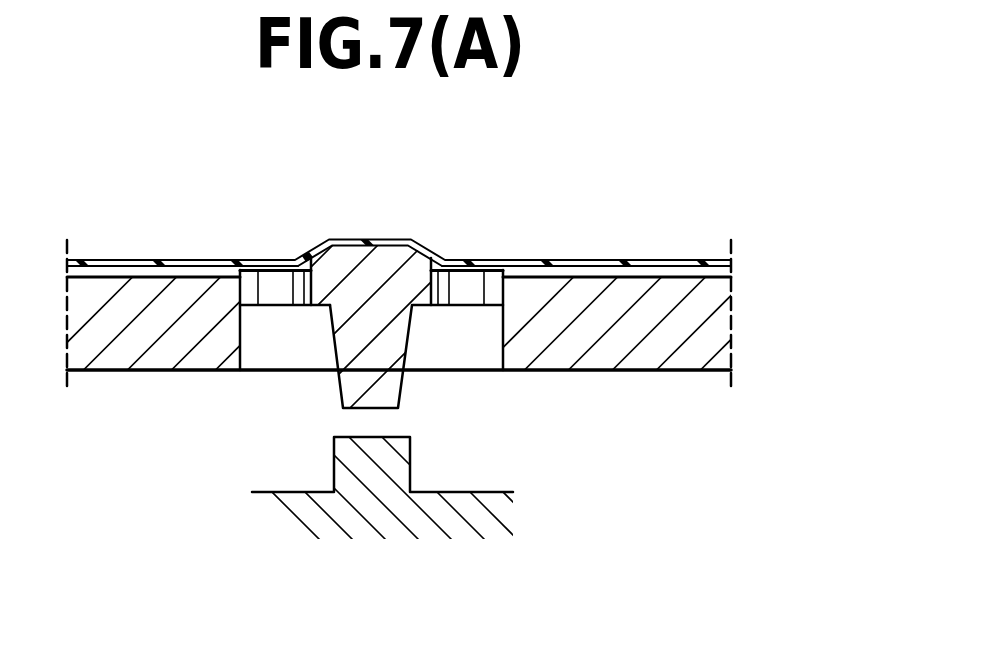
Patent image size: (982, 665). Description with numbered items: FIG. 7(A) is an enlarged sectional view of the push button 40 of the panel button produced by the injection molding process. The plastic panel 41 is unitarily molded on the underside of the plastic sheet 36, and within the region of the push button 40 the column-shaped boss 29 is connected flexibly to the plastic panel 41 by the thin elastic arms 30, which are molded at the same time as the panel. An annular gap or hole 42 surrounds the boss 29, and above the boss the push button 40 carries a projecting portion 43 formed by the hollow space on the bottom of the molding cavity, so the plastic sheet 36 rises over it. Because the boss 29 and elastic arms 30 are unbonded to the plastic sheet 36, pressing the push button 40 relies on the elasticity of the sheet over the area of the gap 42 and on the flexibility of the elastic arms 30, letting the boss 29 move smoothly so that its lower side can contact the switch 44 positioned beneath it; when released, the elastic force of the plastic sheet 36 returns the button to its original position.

The boss 29 is at (398, 404).
The elastic arms 30 is at (268, 288).
The plastic sheet 36 is at (625, 258).
The push button 40 is at (310, 246).
The plastic panel 41 is at (712, 325).
The annular gap or hole 42 is at (267, 358).
The projecting portion 43 is at (400, 239).
The switch 44 is at (410, 452).